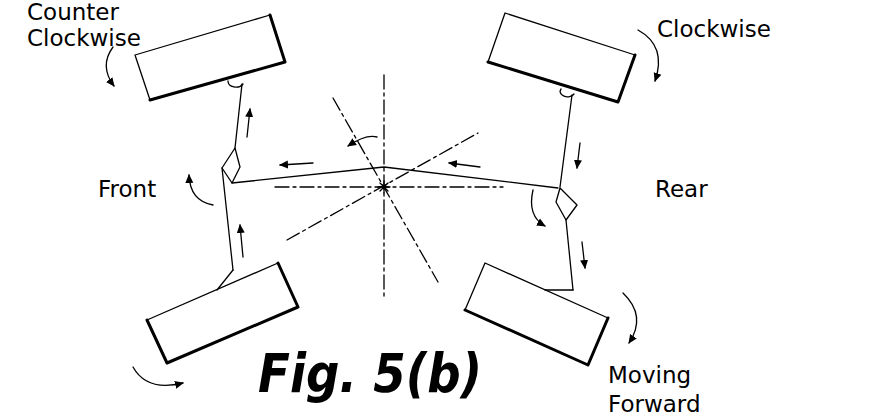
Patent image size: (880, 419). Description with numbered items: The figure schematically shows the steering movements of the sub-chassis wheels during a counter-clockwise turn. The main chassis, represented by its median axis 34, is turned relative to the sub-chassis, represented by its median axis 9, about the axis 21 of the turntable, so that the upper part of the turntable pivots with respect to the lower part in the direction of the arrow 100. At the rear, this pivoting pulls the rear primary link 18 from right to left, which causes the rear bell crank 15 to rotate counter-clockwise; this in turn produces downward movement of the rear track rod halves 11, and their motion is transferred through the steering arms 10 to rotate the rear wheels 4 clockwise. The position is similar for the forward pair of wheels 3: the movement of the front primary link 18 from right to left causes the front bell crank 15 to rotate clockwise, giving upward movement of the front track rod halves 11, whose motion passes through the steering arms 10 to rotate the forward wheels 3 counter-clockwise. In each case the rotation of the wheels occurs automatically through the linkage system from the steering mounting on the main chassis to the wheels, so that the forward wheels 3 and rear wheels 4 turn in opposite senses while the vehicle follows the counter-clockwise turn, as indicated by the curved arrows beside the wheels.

The forward wheels 3 is at (187, 48).
The rear wheels 4 is at (498, 42).
The median axis of the sub-chassis 9 is at (323, 189).
The steering arms 10 is at (243, 88).
The track rod halves 11 is at (238, 105).
The bell crank 15 is at (227, 165).
The primary link 18 is at (260, 180).
The axis of the turntable 21 is at (373, 203).
The median axis of the main chassis 34 is at (458, 142).
The arrow indicating direction of rotation 100 is at (358, 137).